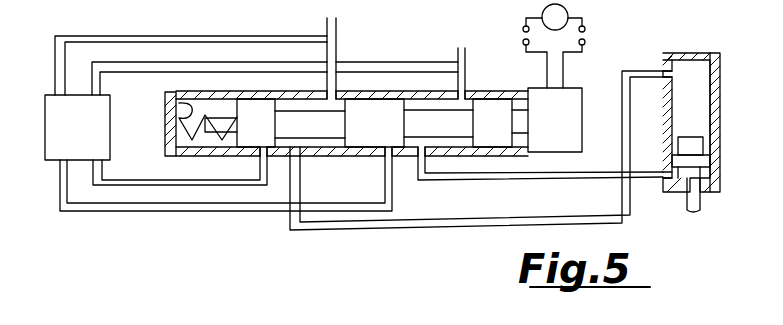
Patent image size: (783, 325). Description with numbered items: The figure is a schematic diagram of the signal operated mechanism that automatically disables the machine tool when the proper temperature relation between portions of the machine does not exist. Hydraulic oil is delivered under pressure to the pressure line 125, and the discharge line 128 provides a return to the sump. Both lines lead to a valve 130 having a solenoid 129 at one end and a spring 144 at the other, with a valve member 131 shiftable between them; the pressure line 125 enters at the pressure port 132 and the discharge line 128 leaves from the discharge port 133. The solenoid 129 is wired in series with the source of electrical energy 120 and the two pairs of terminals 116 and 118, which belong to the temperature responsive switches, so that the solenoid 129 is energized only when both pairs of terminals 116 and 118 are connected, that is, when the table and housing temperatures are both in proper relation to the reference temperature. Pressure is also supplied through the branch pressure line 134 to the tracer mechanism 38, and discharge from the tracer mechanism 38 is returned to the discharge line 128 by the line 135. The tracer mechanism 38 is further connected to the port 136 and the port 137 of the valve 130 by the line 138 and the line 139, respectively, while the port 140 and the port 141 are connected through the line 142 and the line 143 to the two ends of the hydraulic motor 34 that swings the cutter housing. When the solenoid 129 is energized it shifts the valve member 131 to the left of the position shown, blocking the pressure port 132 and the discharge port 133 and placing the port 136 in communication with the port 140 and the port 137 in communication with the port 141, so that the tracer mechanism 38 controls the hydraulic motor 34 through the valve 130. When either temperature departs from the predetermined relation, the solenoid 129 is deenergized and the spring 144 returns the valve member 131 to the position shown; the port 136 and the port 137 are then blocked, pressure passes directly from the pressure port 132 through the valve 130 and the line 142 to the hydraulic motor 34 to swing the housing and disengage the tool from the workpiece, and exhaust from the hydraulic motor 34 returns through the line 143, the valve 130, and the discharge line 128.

The hydraulic motor 34 is at (720, 120).
The tracer mechanism 38 is at (77, 127).
The terminals 116 is at (586, 32).
The terminals 118 is at (522, 33).
The source of electrical energy 120 is at (568, 15).
The pressure line 125 is at (338, 24).
The discharge line 128 is at (457, 52).
The solenoid 129 is at (555, 120).
The valve 130 is at (170, 148).
The valve member 131 is at (328, 135).
The pressure port 132 is at (344, 93).
The discharge port 133 is at (468, 88).
The branch pressure line 134 is at (150, 36).
The line 135 is at (170, 67).
The port 136 is at (256, 158).
The port 137 is at (393, 160).
The line 138 is at (100, 172).
The line 139 is at (172, 207).
The port 140 is at (300, 152).
The port 141 is at (428, 158).
The line 142 is at (468, 221).
The line 143 is at (538, 182).
The spring 144 is at (178, 104).